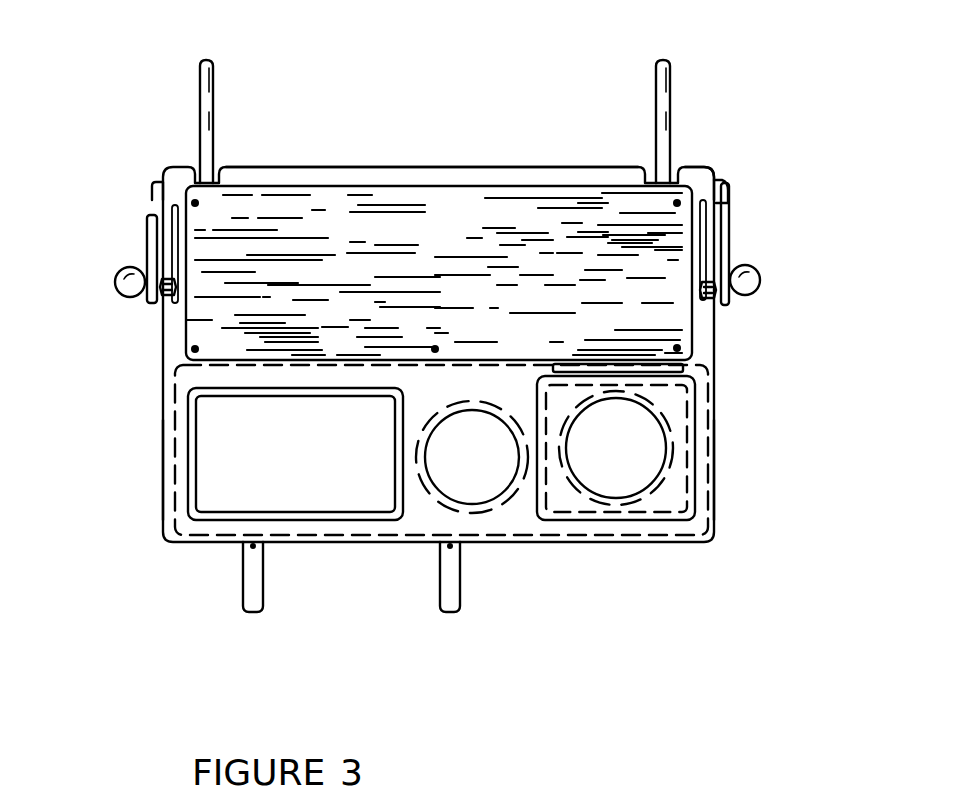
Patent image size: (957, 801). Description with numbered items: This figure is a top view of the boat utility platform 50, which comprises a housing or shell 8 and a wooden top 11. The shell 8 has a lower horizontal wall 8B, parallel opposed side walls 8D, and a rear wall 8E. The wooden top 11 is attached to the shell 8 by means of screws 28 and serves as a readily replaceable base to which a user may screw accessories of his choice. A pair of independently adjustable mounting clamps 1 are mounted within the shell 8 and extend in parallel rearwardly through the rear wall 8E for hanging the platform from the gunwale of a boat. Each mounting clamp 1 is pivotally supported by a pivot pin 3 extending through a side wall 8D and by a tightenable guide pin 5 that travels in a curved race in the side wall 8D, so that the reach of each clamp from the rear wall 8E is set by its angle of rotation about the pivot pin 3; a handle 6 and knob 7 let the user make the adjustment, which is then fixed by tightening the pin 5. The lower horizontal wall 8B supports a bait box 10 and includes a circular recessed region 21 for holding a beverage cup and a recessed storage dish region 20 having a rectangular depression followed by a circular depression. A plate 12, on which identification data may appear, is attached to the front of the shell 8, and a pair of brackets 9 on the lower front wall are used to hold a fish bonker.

The mounting clamp 1 is at (212, 80).
The pivot pin 3 is at (147, 187).
The tightenable guide pin 5 is at (715, 307).
The handle 6 is at (148, 243).
The knob 7 is at (121, 272).
The shell 8 is at (590, 528).
The lower horizontal wall 8B is at (422, 517).
The side wall 8D is at (160, 435).
The rear wall 8E is at (377, 168).
The bracket 9 is at (255, 545).
The bait box 10 is at (304, 471).
The wooden top 11 is at (435, 202).
The plate 12 is at (678, 372).
The recessed storage dish region 20 is at (647, 465).
The circular recessed region 21 is at (468, 492).
The screw 28 is at (690, 195).
The boat utility platform 50 is at (430, 120).